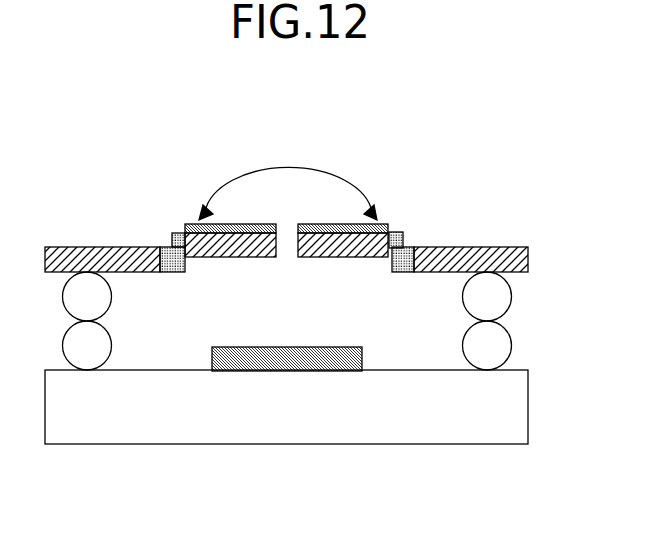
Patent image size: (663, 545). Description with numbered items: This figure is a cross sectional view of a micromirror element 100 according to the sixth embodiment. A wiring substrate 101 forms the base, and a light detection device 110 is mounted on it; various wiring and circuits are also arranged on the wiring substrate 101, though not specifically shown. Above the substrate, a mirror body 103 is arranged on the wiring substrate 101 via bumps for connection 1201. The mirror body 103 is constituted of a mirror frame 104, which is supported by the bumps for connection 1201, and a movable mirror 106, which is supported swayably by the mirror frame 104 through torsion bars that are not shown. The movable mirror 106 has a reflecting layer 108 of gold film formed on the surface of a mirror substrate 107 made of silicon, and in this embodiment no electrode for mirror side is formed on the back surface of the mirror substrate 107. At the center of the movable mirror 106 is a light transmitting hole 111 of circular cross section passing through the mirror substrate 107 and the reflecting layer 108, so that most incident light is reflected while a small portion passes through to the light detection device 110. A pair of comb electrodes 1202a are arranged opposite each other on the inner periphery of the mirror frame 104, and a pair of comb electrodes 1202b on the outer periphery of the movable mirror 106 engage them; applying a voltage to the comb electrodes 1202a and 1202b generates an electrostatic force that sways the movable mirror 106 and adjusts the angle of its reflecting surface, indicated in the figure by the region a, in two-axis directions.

The micromirror element 100 is at (492, 166).
The wiring substrate 101 is at (458, 436).
The mirror body 103 is at (147, 135).
The mirror frame 104 is at (88, 247).
The movable mirror 106 is at (178, 147).
The mirror substrate 107 is at (174, 234).
The reflecting layer 108 is at (186, 224).
The light detection device 110 is at (288, 360).
The light transmitting hole 111 is at (288, 238).
The bumps for connection 1201 is at (503, 294).
The comb electrodes 1202a is at (402, 273).
The comb electrodes 1202b is at (400, 233).
The imaging region a is at (353, 178).